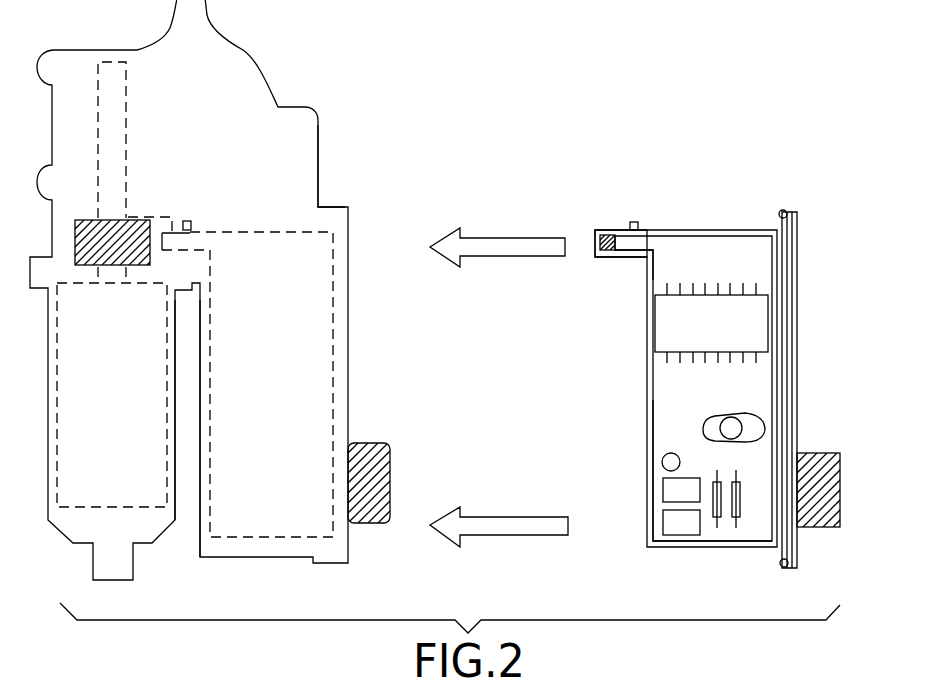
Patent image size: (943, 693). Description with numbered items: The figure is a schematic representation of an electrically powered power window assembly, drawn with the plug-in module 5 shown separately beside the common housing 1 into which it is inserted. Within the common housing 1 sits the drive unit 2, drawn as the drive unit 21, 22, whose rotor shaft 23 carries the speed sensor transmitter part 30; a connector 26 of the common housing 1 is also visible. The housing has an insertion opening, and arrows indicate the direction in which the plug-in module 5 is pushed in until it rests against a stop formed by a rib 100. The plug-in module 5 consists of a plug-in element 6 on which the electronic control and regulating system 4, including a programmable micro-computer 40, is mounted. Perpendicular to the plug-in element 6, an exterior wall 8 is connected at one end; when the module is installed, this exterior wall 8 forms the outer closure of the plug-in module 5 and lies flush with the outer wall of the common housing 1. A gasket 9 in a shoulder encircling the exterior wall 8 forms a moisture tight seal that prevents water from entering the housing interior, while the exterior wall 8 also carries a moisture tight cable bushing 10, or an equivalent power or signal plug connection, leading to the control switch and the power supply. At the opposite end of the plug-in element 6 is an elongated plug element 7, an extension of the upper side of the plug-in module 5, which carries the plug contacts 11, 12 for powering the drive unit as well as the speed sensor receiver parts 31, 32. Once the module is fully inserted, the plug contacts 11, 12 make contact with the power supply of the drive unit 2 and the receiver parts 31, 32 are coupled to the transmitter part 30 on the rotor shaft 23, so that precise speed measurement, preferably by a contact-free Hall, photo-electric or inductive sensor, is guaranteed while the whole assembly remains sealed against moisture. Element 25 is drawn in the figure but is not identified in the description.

The common housing 1 is at (250, 54).
The drive unit 2 is at (13, 226).
The electronic control and regulating system 4 is at (725, 403).
The plug-in module 5 is at (318, 392).
The plug-in element 6 is at (668, 413).
The plug element 7 is at (620, 258).
The exterior wall 8 is at (783, 210).
The gasket 9 is at (801, 360).
The cable bushing 10 is at (818, 528).
The plug contact 11 is at (586, 271).
The plug contact 12 is at (598, 248).
The drive unit 21 is at (87, 395).
The drive unit 22 is at (304, 160).
The rotor shaft 23 is at (114, 67).
The partition wall 25 is at (189, 512).
The connector 26 is at (330, 556).
The speed sensor transmitter part 30 is at (77, 262).
The speed sensor receiver part 31 is at (617, 209).
The speed sensor receiver part 32 is at (609, 230).
The micro-computer 40 is at (632, 345).
The rib 100 is at (190, 221).